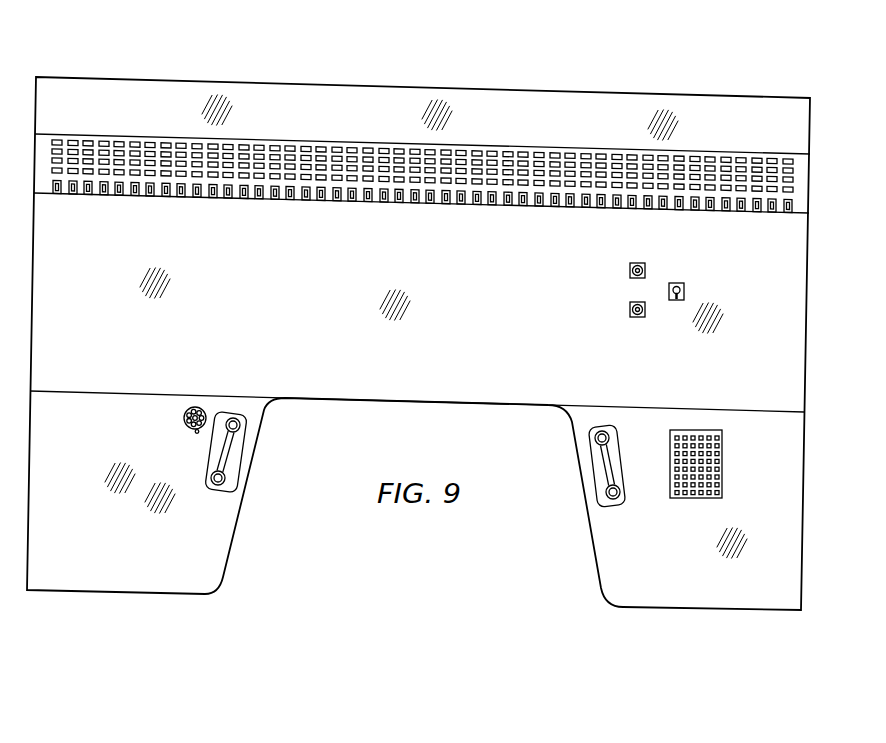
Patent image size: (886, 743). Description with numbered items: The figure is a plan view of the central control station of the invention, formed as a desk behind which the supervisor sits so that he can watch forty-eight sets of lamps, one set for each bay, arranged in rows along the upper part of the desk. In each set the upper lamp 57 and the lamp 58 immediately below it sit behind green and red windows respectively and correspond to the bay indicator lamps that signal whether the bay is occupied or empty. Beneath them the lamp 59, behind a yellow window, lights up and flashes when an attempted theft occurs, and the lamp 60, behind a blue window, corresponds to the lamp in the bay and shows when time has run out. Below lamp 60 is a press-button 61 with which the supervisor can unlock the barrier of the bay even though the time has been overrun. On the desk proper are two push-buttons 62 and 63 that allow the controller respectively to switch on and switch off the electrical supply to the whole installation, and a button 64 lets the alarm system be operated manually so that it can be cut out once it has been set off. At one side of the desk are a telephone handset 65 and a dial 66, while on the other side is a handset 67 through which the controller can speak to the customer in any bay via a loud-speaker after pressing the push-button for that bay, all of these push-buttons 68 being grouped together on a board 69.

The upper lamp 57 is at (57, 138).
The lamp 58 is at (58, 150).
The lamp 59 is at (55, 163).
The lamp 60 is at (60, 173).
The press-button 61 is at (105, 191).
The push-button 62 is at (631, 268).
The push-button 63 is at (630, 312).
The button 64 is at (684, 289).
The telephone handset 65 is at (232, 449).
The dial 66 is at (200, 408).
The handset 67 is at (600, 464).
The push-buttons 68 is at (700, 498).
The board 69 is at (723, 452).